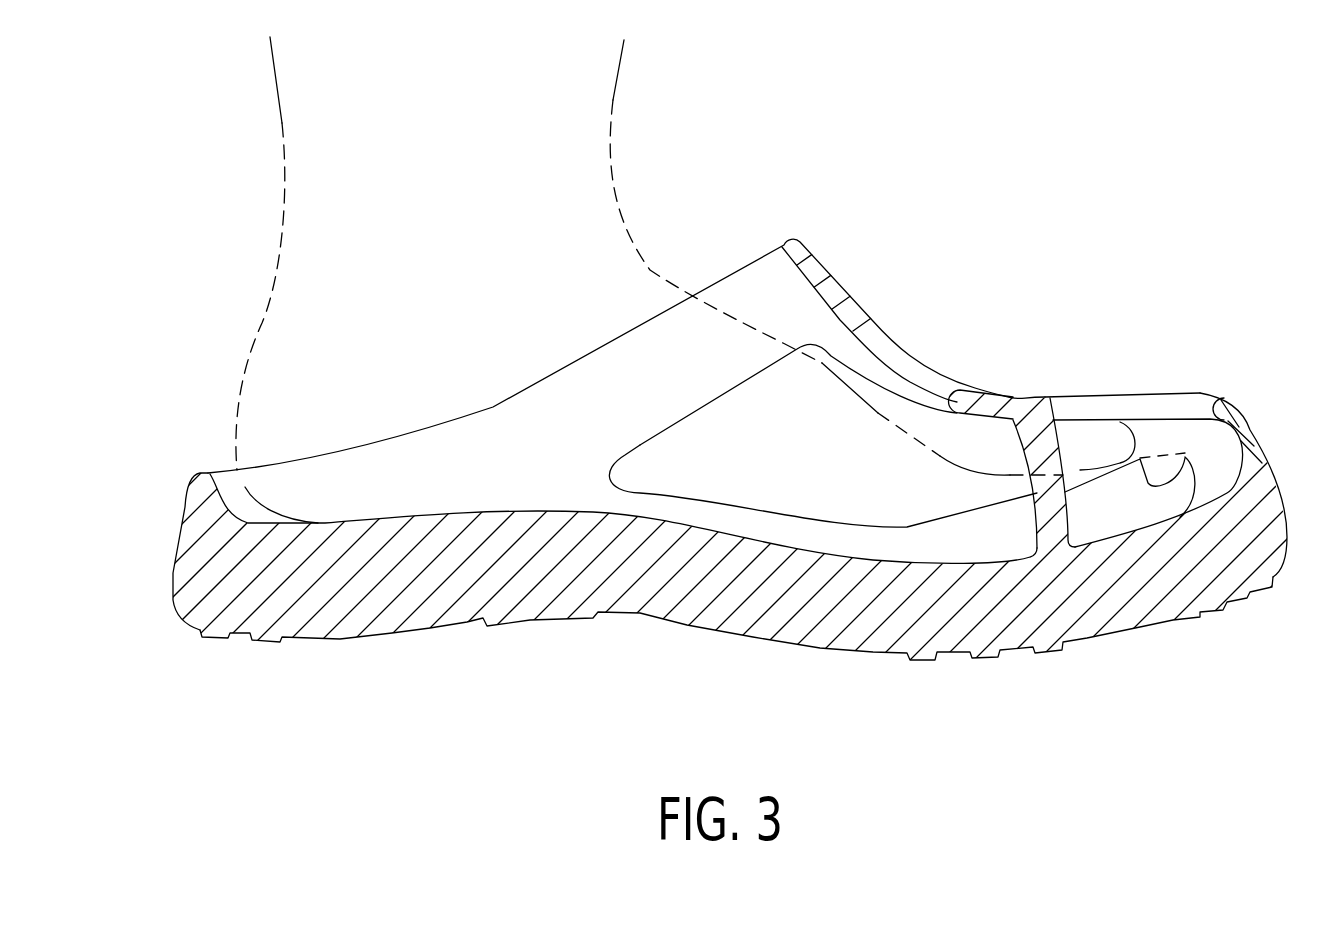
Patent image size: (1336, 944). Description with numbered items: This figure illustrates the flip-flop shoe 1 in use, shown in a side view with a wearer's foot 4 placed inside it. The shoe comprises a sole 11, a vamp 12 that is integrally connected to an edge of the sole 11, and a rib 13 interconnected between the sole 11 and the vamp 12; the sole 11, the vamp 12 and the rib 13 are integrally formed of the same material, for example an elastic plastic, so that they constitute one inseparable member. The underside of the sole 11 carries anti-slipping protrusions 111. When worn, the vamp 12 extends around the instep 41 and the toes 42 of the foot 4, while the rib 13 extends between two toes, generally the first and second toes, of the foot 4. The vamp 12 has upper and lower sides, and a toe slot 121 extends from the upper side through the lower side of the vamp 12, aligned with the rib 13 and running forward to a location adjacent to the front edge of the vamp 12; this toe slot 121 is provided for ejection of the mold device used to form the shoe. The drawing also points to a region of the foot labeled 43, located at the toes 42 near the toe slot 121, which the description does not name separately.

The flip-flop shoe 1 is at (1268, 412).
The sole 11 is at (767, 627).
The anti-slipping protrusions 111 is at (1048, 653).
The vamp 12 is at (810, 267).
The toe slot 121 is at (1153, 405).
The rib 13 is at (1055, 428).
The foot 4 is at (640, 197).
The instep 41 is at (853, 382).
The toes 42 is at (1192, 458).
The toe joint 43 is at (1097, 460).